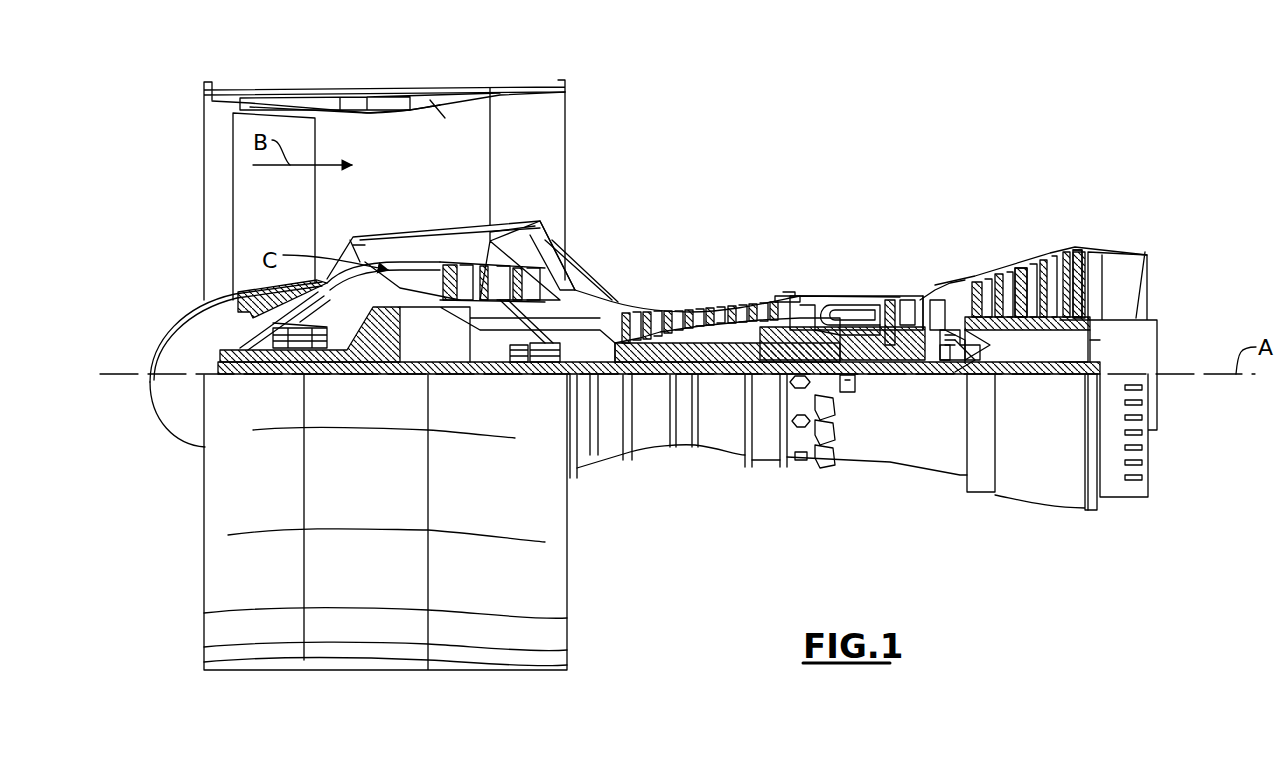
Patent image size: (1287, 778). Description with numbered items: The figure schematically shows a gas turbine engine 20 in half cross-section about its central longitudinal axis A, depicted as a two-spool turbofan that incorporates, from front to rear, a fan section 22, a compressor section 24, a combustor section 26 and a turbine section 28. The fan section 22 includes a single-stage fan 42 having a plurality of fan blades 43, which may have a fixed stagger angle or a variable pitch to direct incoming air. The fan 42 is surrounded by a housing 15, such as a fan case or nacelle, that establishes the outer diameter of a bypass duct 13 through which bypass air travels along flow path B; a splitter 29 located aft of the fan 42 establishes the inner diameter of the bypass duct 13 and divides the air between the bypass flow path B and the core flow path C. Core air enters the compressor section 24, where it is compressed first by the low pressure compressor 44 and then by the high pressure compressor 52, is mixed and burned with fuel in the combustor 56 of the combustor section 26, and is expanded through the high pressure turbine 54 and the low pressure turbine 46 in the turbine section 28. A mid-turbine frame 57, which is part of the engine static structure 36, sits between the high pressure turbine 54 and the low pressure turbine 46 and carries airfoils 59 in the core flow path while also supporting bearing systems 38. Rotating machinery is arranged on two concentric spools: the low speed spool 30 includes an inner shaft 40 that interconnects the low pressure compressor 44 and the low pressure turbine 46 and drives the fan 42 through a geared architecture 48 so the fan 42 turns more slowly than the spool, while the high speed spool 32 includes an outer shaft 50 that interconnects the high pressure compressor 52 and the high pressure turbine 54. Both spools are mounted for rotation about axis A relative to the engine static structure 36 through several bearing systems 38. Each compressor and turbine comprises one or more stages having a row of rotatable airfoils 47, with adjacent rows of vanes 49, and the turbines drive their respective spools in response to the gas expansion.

The gas turbine engine 20 is at (845, 140).
The fan section 22 is at (316, 84).
The housing 15 is at (385, 95).
The bypass duct 13 is at (435, 115).
The fan 42 is at (288, 216).
The fan blades 43 is at (300, 222).
The splitter 29 is at (360, 250).
The rotatable airfoils 47 is at (448, 262).
The vanes 49 is at (468, 262).
The low pressure compressor 44 is at (488, 283).
The compressor section 24 is at (616, 284).
The high pressure compressor 52 is at (706, 306).
The high speed spool 32 is at (775, 300).
The combustor section 26 is at (840, 270).
The combustor 56 is at (845, 312).
The high pressure turbine 54 is at (918, 298).
The mid-turbine frame 57 is at (947, 286).
The turbine section 28 is at (985, 235).
The low pressure turbine 46 is at (1030, 262).
The airfoils 59 is at (972, 347).
The geared architecture 48 is at (390, 360).
The bearing systems 38 is at (522, 365).
The inner shaft 40 is at (590, 383).
The low speed spool 30 is at (724, 380).
The engine static structure 36 is at (764, 468).
The outer shaft 50 is at (850, 365).